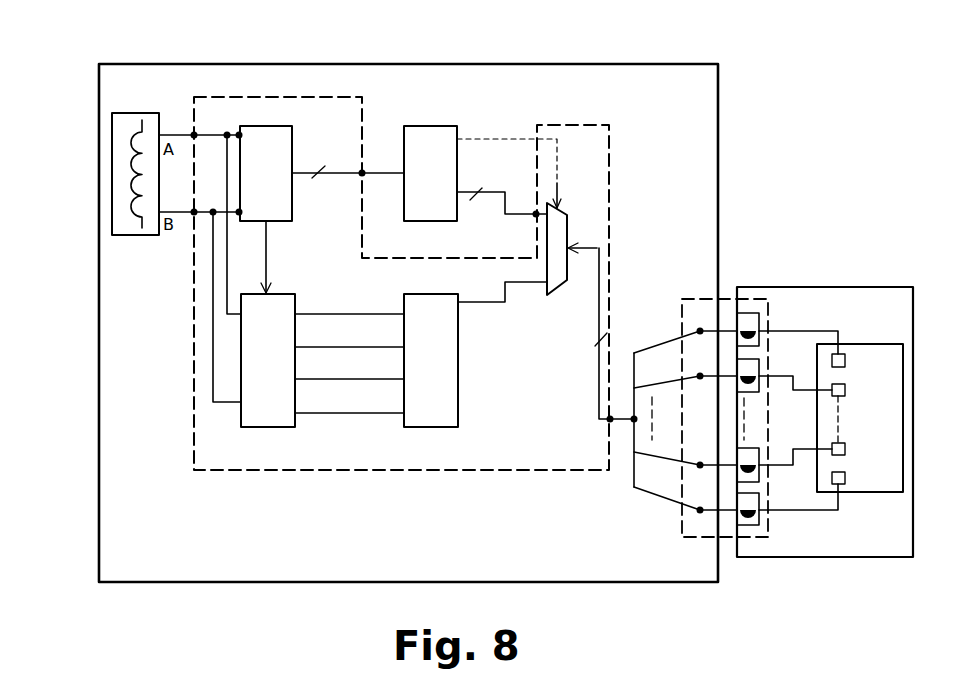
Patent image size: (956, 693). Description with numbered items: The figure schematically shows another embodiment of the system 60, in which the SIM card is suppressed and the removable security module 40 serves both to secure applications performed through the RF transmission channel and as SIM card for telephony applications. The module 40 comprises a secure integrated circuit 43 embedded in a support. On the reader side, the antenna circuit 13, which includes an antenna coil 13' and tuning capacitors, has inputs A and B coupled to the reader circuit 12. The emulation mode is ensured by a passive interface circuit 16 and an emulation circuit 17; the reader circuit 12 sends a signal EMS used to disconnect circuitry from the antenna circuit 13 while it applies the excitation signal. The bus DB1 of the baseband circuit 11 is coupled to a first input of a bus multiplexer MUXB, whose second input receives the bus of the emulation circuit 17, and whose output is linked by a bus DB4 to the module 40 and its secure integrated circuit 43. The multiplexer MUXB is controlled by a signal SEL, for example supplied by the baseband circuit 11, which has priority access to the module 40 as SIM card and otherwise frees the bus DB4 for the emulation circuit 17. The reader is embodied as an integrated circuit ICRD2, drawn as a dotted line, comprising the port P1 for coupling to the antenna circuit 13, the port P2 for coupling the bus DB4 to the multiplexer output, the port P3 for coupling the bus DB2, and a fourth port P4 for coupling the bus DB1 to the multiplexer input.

The system 60 is at (748, 179).
The removable security module 40 is at (853, 268).
The secure integrated circuit 43 is at (855, 428).
The antenna circuit 13 is at (85, 174).
The antenna coil 13' is at (92, 168).
The reader circuit 12 is at (255, 184).
The baseband circuit 11 is at (419, 184).
The passive interface circuit 16 is at (257, 371).
The emulation circuit 17 is at (420, 371).
The port P1 is at (195, 134).
The port P2 is at (609, 423).
The port P3 is at (363, 172).
The fourth port P4 is at (535, 213).
The bus DB1 is at (502, 207).
The bus DB2 is at (348, 186).
The bus DB4 is at (591, 331).
The signal EMS is at (288, 257).
The signal SEL is at (575, 183).
The bus multiplexer MUXB is at (565, 265).
The integrated circuit ICRD2 is at (305, 470).